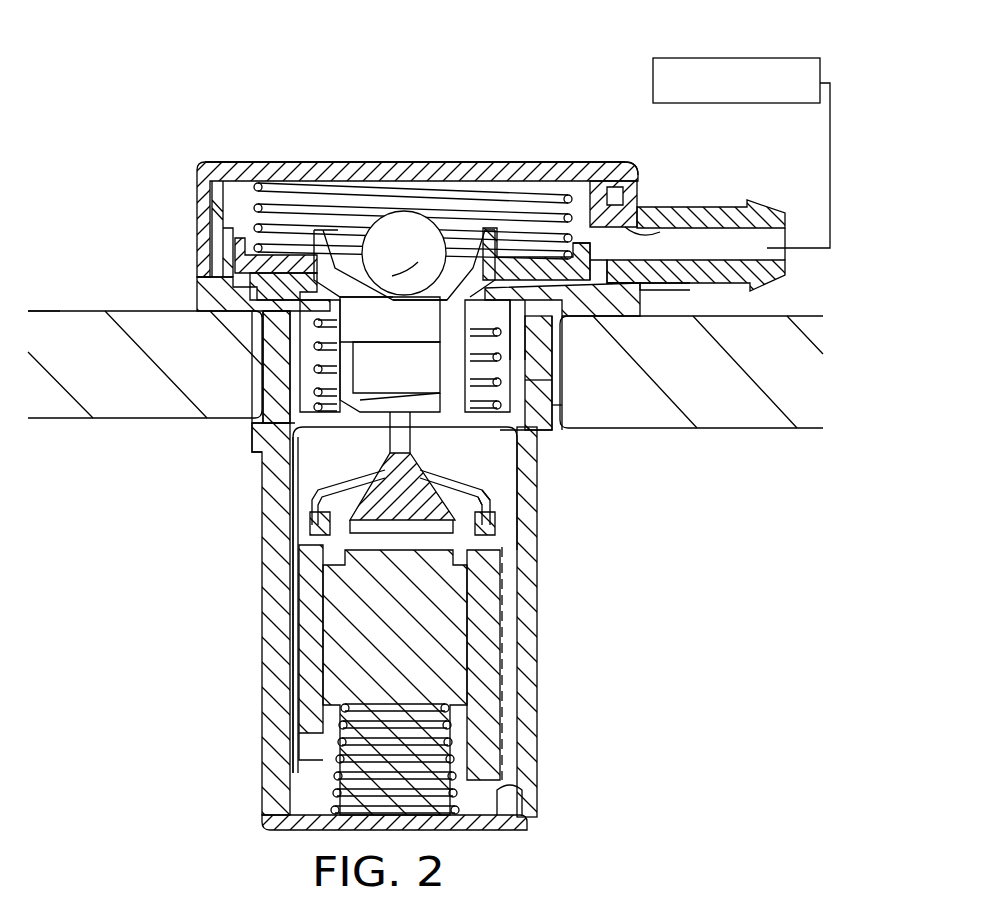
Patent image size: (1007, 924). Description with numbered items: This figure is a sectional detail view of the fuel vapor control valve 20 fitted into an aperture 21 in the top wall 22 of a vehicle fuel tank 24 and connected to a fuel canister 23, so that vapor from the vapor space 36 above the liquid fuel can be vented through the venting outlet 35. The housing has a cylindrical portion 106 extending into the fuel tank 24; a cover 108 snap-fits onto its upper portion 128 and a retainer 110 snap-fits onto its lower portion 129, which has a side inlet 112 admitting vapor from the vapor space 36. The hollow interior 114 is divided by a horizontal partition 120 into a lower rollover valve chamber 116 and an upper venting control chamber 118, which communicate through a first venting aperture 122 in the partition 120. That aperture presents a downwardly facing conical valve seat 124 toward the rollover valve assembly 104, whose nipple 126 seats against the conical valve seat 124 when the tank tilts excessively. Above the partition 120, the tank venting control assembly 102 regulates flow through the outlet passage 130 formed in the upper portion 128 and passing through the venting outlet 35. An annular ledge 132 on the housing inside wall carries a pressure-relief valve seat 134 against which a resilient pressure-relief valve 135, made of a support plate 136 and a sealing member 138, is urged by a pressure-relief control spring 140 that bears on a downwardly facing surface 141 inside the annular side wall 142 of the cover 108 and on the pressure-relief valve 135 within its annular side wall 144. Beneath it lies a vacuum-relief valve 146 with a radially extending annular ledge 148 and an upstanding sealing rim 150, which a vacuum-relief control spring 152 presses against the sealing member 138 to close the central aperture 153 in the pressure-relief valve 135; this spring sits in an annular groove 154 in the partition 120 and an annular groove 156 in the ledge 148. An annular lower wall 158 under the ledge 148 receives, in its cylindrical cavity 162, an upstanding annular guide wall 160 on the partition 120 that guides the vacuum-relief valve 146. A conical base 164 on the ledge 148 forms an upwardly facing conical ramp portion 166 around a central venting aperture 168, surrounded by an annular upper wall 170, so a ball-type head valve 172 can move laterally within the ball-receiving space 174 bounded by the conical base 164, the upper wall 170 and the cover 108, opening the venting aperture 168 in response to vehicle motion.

The fuel vapor control valve 20 is at (513, 66).
The aperture 21 is at (252, 430).
The top wall 22 is at (95, 311).
The fuel canister 23 is at (787, 48).
The fuel tank 24 is at (791, 316).
The venting outlet 35 is at (762, 204).
The vapor space 36 is at (78, 458).
The tank venting control assembly 102 is at (306, 360).
The rollover valve assembly 104 is at (530, 485).
The cylindrical portion 106 is at (542, 601).
The cover 108 is at (560, 172).
The retainer 110 is at (313, 825).
The side inlet 112 is at (290, 448).
The hollow interior 114 is at (290, 338).
The rollover valve chamber 116 is at (499, 479).
The venting control chamber 118 is at (545, 372).
The partition 120 is at (495, 461).
The first venting aperture 122 is at (381, 348).
The conical valve seat 124 is at (425, 468).
The nipple 126 is at (388, 446).
The upper portion 128 is at (195, 282).
The lower portion 129 is at (258, 683).
The outlet passage 130 is at (660, 230).
The ledge 132 is at (545, 181).
The pressure-relief valve seat 134 is at (612, 283).
The pressure-relief valve 135 is at (215, 245).
The support plate 136 is at (318, 228).
The sealing member 138 is at (268, 195).
The pressure-relief control spring 140 is at (248, 190).
The downwardly facing surface 141 is at (428, 228).
The annular side wall 142 is at (615, 181).
The annular side wall 144 is at (260, 183).
The vacuum-relief valve 146 is at (268, 318).
The annular ledge 148 is at (235, 300).
The sealing rim 150 is at (625, 296).
The vacuum-relief control spring 152 is at (548, 392).
The central aperture 153 is at (508, 240).
The annular groove 154 is at (557, 405).
The annular groove 156 is at (562, 320).
The annular lower wall 158 is at (508, 360).
The annular guide wall 160 is at (397, 366).
The cylindrical cavity 162 is at (315, 377).
The conical base 164 is at (493, 262).
The conical ramp portion 166 is at (450, 228).
The central venting aperture 168 is at (400, 292).
The annular upper wall 170 is at (352, 232).
The ball-type head valve 172 is at (377, 263).
The ball-receiving space 174 is at (358, 190).